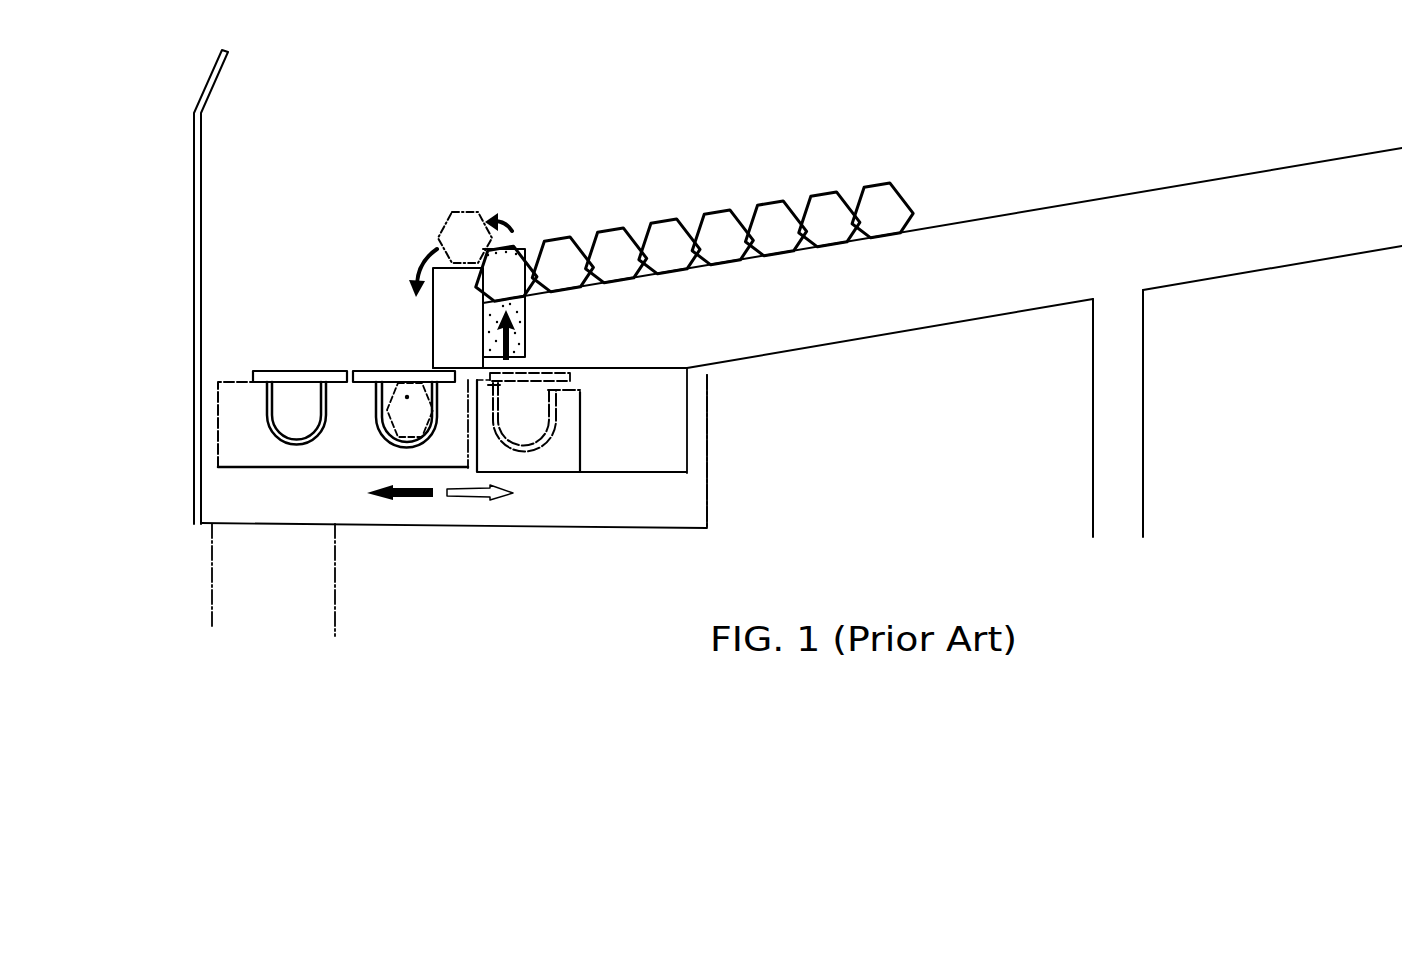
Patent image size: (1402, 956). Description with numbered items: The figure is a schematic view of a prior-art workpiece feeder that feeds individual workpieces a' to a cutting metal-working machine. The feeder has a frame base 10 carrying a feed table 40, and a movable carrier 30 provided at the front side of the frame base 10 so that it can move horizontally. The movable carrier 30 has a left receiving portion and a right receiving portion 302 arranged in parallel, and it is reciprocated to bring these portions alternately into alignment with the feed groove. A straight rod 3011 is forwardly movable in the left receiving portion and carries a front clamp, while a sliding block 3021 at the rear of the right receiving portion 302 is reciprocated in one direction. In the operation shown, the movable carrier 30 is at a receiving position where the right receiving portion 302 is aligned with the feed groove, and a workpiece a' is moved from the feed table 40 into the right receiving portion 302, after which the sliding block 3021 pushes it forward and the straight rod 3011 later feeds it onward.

The frame base 10 is at (320, 617).
The movable carrier 30 is at (228, 434).
The right receiving portion 302 is at (353, 413).
The straight rod 3011 is at (277, 372).
The sliding block 3021 is at (370, 372).
The feed table 40 is at (992, 243).
The workpiece a' is at (646, 295).